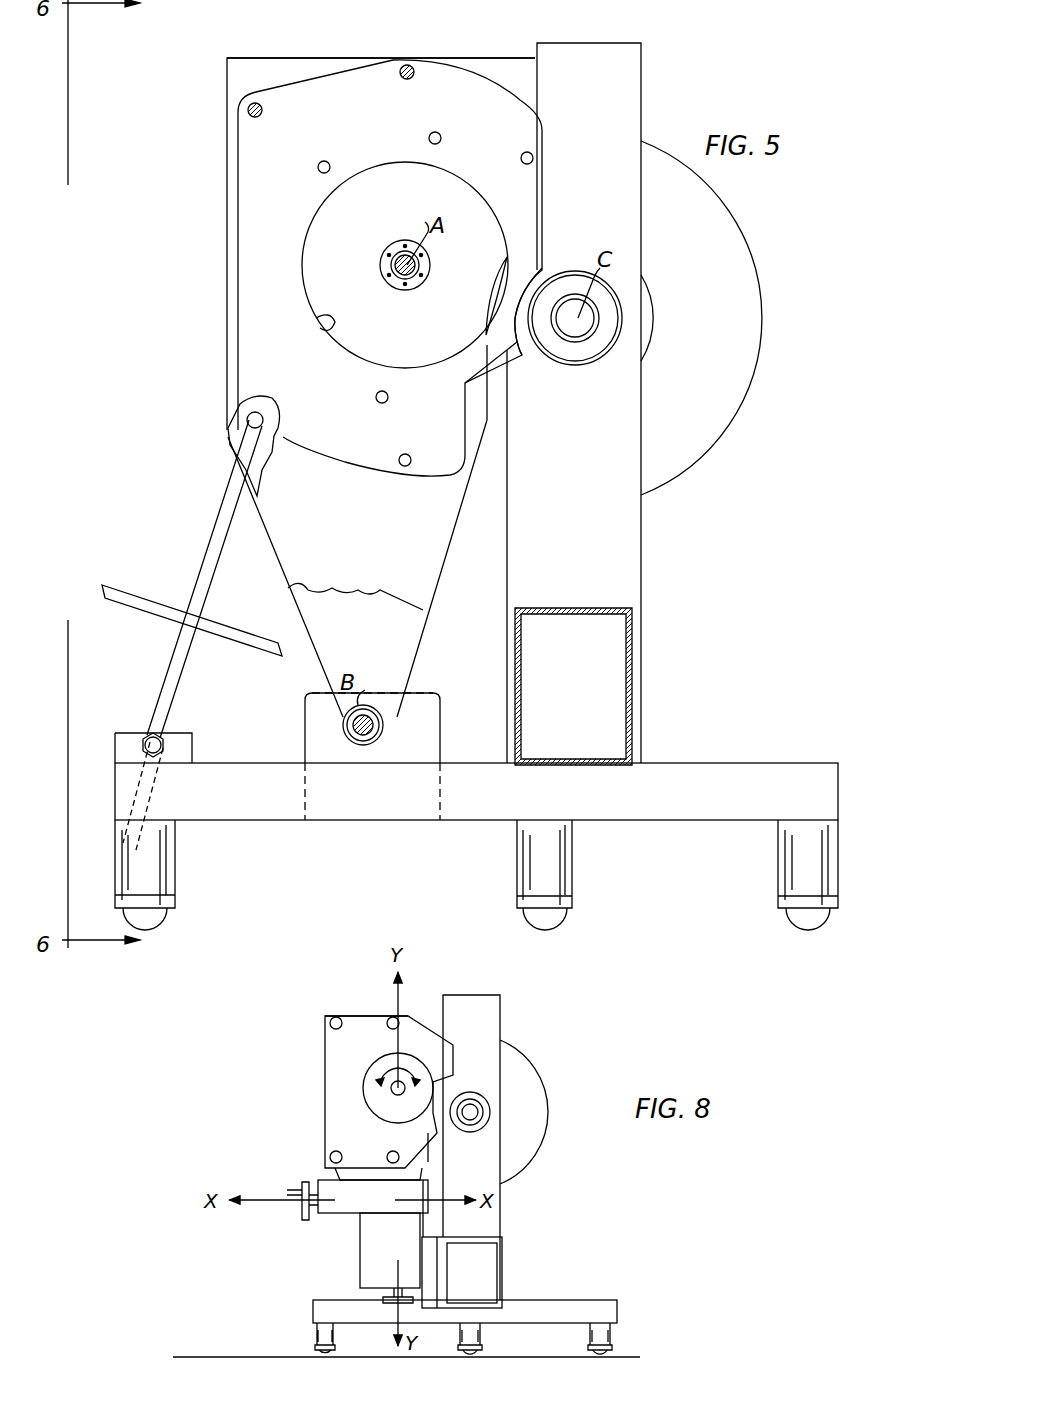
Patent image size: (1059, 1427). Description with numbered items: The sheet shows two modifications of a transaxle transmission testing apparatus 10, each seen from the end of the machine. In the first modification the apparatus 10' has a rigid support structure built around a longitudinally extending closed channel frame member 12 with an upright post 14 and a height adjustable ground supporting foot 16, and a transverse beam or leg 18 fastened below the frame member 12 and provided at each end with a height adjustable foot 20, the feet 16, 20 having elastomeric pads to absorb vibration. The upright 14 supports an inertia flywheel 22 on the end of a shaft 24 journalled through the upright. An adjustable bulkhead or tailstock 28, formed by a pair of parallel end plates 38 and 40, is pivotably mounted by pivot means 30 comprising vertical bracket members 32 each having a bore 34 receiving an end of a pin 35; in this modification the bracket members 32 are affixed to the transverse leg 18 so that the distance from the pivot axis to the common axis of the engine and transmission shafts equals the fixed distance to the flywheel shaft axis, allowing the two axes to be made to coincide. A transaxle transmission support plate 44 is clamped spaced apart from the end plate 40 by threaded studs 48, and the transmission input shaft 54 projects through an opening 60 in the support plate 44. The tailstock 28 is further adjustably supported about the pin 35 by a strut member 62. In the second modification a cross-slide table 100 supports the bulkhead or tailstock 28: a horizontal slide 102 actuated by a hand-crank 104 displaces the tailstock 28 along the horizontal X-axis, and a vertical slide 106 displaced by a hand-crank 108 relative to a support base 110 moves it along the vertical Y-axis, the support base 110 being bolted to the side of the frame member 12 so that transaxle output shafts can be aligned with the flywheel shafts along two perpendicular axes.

In FIG. 8, the transaxle transmission testing apparatus 10 is at (392, 1176).
In FIG. 5, the apparatus 10' is at (477, 485).
In FIG. 5, the closed channel frame member 12 is at (633, 700).
In FIG. 8, the closed channel frame member 12 is at (503, 1250).
In FIG. 5, the upright post 14 is at (626, 577).
In FIG. 8, the upright post 14 is at (488, 1160).
In FIG. 5, the height adjustable ground supporting foot 16 is at (572, 857).
In FIG. 5, the transverse beam or leg 18 is at (478, 822).
In FIG. 8, the transverse beam or leg 18 is at (574, 1310).
In FIG. 5, the height adjustable foot 20 is at (176, 860).
In FIG. 5, the inertia flywheel 22 is at (748, 315).
In FIG. 8, the inertia flywheel 22 is at (540, 1110).
In FIG. 5, the shaft 24 is at (585, 340).
In FIG. 8, the shaft 24 is at (486, 1108).
In FIG. 5, the bulkhead or tailstock 28 is at (318, 58).
In FIG. 8, the bulkhead or tailstock 28 is at (360, 1014).
In FIG. 5, the pivot means 30 is at (347, 732).
In FIG. 5, the vertical bracket member 32 is at (440, 697).
In FIG. 5, the bore 34 is at (366, 745).
In FIG. 5, the pin 35 is at (383, 722).
In FIG. 5, the end plate 38 is at (230, 442).
In FIG. 5, the end plate 40 is at (227, 343).
In FIG. 5, the transaxle transmission support plate 44 is at (250, 250).
In FIG. 8, the transaxle transmission support plate 44 is at (335, 1078).
In FIG. 5, the threaded stud 48 is at (250, 113).
In FIG. 5, the transmission input shaft 54 is at (418, 264).
In FIG. 8, the transmission input shaft 54 is at (404, 1096).
In FIG. 5, the opening 60 is at (325, 328).
In FIG. 5, the strut member 62 is at (170, 652).
In FIG. 8, the cross-slide table 100 is at (343, 1245).
In FIG. 8, the horizontal slide 102 is at (355, 1203).
In FIG. 8, the hand-crank 104 is at (300, 1215).
In FIG. 8, the vertical slide 106 is at (365, 1265).
In FIG. 8, the hand-crank 108 is at (383, 1304).
In FIG. 8, the support base 110 is at (462, 1275).